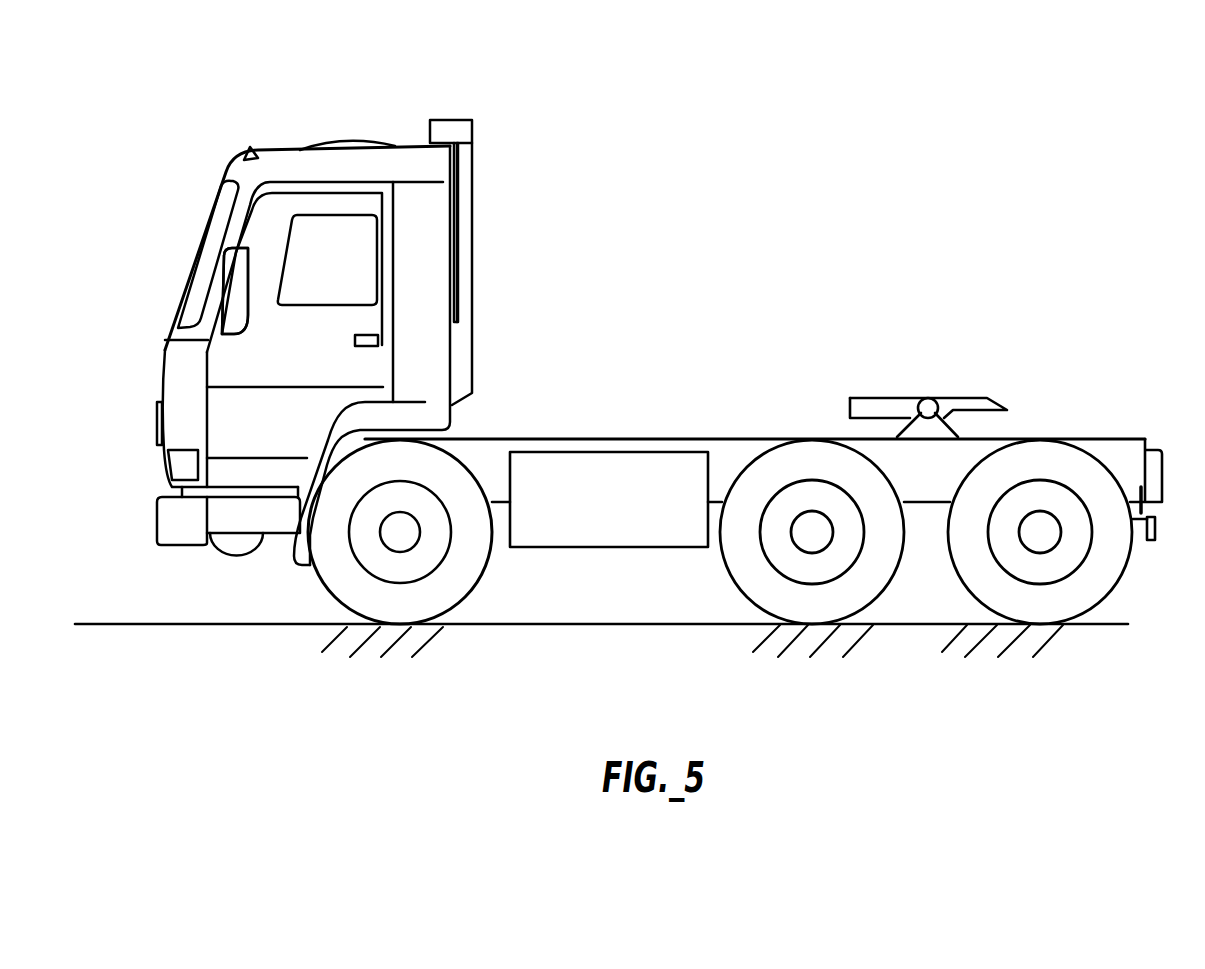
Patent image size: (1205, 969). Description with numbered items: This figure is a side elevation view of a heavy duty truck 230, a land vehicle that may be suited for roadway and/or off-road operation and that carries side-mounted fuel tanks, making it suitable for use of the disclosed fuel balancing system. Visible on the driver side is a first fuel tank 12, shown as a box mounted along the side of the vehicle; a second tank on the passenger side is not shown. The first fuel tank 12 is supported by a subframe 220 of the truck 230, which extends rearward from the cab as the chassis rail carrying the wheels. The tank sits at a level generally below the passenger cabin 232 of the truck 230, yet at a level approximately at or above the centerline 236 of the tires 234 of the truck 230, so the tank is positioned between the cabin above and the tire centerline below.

The heavy duty truck 230 is at (196, 86).
The passenger cabin 232 is at (258, 278).
The subframe 220 is at (673, 417).
The first fuel tank 12 is at (625, 512).
The tires 234 is at (323, 591).
The centerline 236 is at (405, 532).